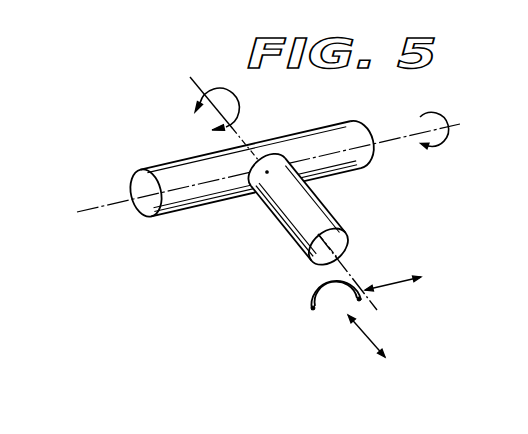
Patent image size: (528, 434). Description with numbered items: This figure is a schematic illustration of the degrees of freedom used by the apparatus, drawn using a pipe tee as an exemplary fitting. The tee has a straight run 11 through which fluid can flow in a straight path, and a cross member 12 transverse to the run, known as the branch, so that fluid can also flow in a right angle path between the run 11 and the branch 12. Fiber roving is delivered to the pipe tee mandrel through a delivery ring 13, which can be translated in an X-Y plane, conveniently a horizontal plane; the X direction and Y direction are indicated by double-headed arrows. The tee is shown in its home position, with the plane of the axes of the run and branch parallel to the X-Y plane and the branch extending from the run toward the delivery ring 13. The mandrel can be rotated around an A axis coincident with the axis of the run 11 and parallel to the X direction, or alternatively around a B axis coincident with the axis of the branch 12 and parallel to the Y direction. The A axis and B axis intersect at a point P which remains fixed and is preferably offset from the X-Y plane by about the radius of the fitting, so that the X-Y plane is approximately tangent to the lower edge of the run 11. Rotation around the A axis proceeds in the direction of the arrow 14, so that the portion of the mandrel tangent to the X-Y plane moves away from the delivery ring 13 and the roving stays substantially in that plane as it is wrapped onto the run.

The straight run 11 is at (345, 121).
The cross member (branch) 12 is at (271, 220).
The delivery ring 13 is at (309, 292).
The arrow 14 is at (450, 139).
The A axis A is at (275, 163).
The B axis B is at (219, 118).
The point P is at (266, 166).
The X direction X is at (400, 280).
The Y direction Y is at (372, 347).